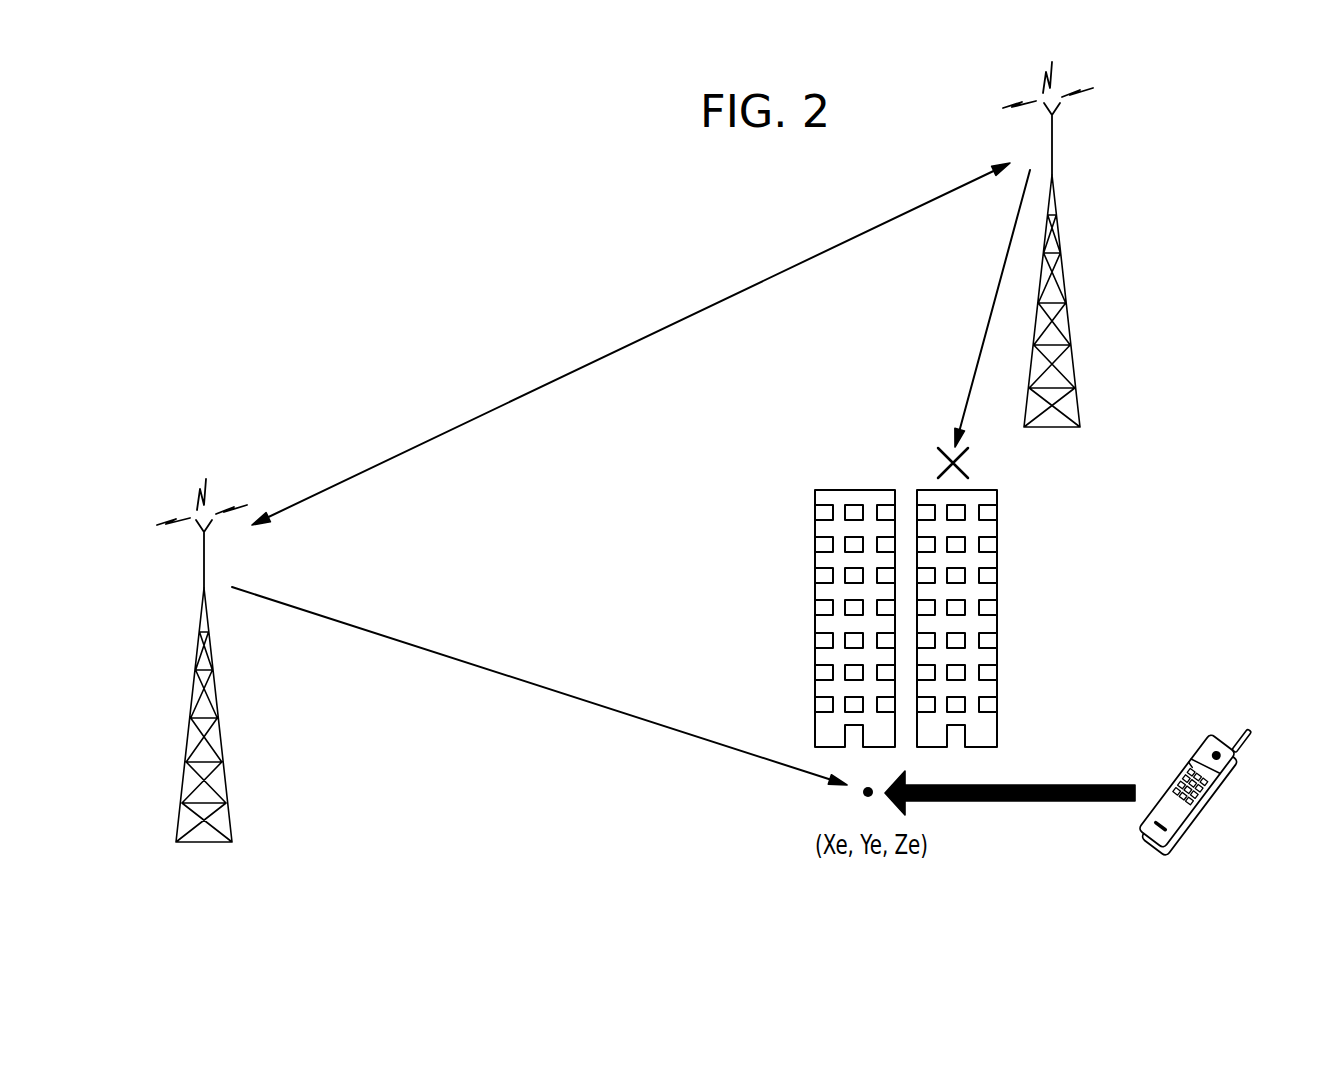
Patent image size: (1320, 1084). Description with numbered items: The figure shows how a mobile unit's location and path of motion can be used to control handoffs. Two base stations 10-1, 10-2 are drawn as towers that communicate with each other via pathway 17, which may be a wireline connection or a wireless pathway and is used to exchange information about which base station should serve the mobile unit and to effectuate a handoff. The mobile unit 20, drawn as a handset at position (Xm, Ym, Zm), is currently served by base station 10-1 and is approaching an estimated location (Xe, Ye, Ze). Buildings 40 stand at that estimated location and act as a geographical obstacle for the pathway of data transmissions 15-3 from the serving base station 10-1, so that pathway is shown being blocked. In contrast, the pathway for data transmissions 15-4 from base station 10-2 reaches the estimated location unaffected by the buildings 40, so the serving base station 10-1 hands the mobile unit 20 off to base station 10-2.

The base station 10-1 is at (1063, 268).
The base station 10-2 is at (228, 845).
The pathway of data transmissions 15-3 is at (979, 358).
The pathway for data transmissions 15-4 is at (524, 681).
The pathway 17 is at (666, 328).
The mobile unit 20 is at (1203, 825).
The buildings 40 is at (998, 604).